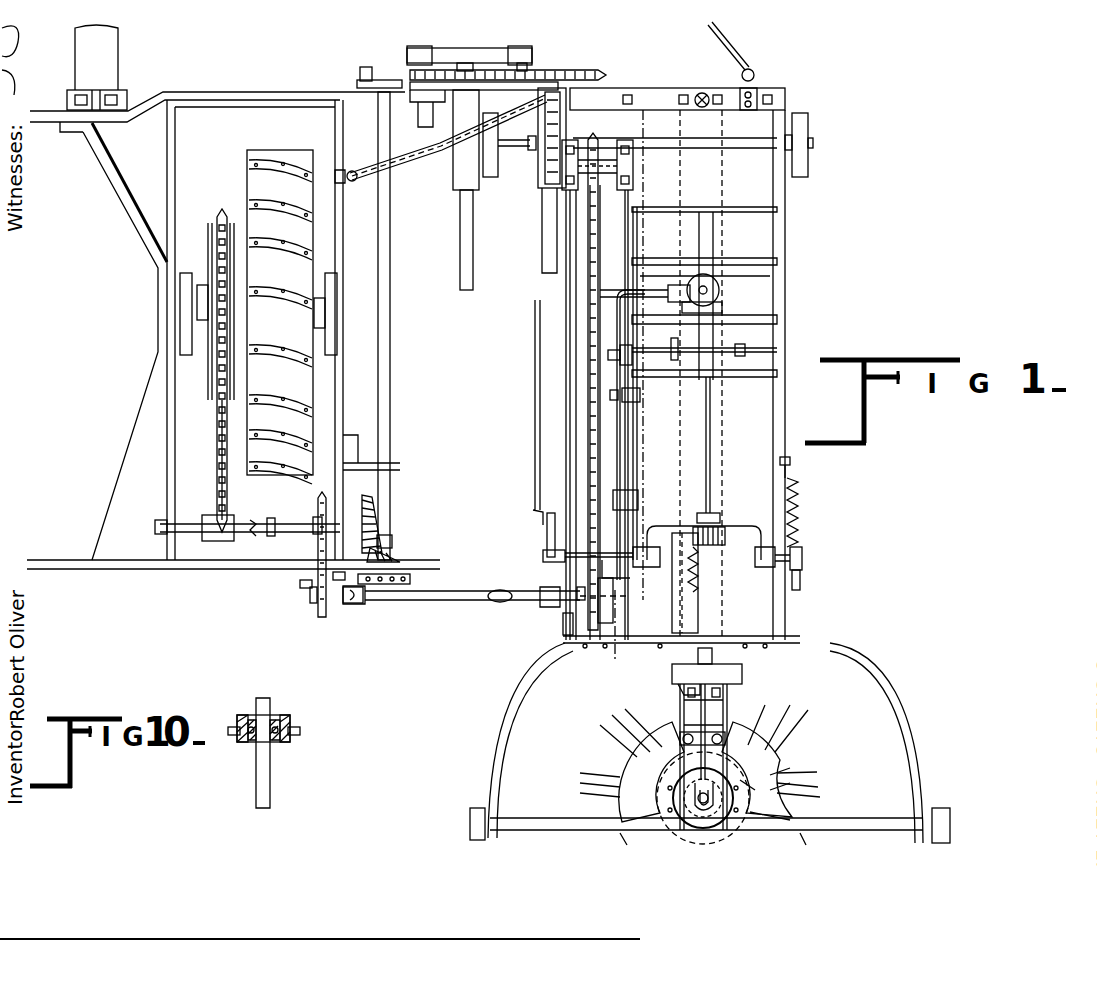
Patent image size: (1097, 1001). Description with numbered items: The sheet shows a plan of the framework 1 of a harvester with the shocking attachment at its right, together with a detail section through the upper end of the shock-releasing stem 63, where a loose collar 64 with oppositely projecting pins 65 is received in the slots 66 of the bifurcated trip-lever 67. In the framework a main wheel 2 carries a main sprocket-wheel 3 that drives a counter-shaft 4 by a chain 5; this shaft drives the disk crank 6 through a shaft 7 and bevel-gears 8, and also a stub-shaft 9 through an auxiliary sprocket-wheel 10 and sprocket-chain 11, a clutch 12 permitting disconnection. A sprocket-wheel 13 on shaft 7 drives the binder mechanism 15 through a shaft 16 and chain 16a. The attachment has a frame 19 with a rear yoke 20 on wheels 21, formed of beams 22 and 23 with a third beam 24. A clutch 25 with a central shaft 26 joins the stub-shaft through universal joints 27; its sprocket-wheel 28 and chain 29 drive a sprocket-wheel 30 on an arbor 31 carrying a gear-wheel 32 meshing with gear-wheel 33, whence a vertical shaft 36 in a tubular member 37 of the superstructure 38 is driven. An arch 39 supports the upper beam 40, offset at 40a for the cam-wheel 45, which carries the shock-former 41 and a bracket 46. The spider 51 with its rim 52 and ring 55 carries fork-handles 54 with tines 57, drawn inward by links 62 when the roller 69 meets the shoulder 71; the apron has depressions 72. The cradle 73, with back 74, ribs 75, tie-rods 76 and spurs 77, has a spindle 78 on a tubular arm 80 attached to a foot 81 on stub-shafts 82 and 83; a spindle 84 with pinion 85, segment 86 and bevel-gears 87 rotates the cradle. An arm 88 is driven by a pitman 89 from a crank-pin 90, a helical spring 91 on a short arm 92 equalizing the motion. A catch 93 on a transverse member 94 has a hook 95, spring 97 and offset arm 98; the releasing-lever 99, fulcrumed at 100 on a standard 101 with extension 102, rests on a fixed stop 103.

In FIG. 1, the framework 1 is at (248, 92).
In FIG. 1, the main wheel 2 is at (300, 238).
In FIG. 1, the main sprocket-wheel 3 is at (220, 225).
In FIG. 1, the counter-shaft 4 is at (285, 524).
In FIG. 1, the chain 5 is at (215, 438).
In FIG. 1, the disk crank 6 is at (375, 88).
In FIG. 1, the shaft 7 is at (392, 372).
In FIG. 1, the bevel-gears 8 is at (375, 522).
In FIG. 1, the stub-shaft 9 is at (340, 603).
In FIG. 1, the auxiliary sprocket-wheel 10 is at (318, 538).
In FIG. 1, the sprocket-chain 11 is at (320, 578).
In FIG. 1, the clutch 12 is at (250, 522).
In FIG. 1, the sprocket-wheel 13 is at (412, 578).
In FIG. 1, the binder mechanism 15 is at (486, 54).
In FIG. 1, the shaft 16 is at (428, 120).
In FIG. 1, the chain 16a is at (545, 75).
In FIG. 1, the frame 19 is at (681, 533).
In FIG. 1, the yoke 20 is at (512, 723).
In FIG. 1, the wheels 21 is at (488, 162).
In FIG. 1, the beam 22 is at (566, 438).
In FIG. 1, the beam 23 is at (790, 409).
In FIG. 1, the beam 24 is at (629, 455).
In FIG. 1, the clutch 25 is at (600, 625).
In FIG. 1, the central shaft 26 is at (547, 602).
In FIG. 1, the universal joints 27 is at (358, 603).
In FIG. 1, the sprocket-wheel 28 is at (578, 635).
In FIG. 1, the chain 29 is at (588, 380).
In FIG. 1, the sprocket-wheel 30 is at (578, 142).
In FIG. 1, the arbor 31 is at (636, 152).
In FIG. 1, the gear-wheel 32 is at (553, 215).
In FIG. 1, the gear-wheel 33 is at (555, 101).
In FIG. 1, the vertical shaft 36 is at (698, 92).
In FIG. 1, the tubular member 37 is at (706, 108).
In FIG. 1, the superstructure 38 is at (718, 90).
In FIG. 1, the arch 39 is at (528, 820).
In FIG. 1, the upper beam 40 is at (722, 499).
In FIG. 1, the downward offset 40a is at (735, 680).
In FIG. 1, the shock-former 41 is at (640, 760).
In FIG. 1, the cam-wheel 45 is at (742, 672).
In FIG. 1, the bracket 46 is at (727, 715).
In FIG. 1, the spider 51 is at (660, 801).
In FIG. 1, the rim 52 is at (790, 800).
In FIG. 1, the fork-handles 54 is at (745, 775).
In FIG. 1, the ring 55 is at (690, 770).
In FIG. 1, the tines 57 is at (778, 722).
In FIG. 1, the links 62 is at (703, 809).
In FIG. 1, the stem 63 is at (775, 785).
In FIG. 10, the stem 63 is at (272, 793).
In FIG. 10, the loose collar 64 is at (252, 745).
In FIG. 1, the pins 65 is at (698, 798).
In FIG. 10, the pins 65 is at (237, 731).
In FIG. 10, the slots 66 is at (240, 740).
In FIG. 1, the trip-lever 67 is at (700, 735).
In FIG. 10, the trip-lever 67 is at (278, 722).
In FIG. 1, the roller 69 is at (702, 662).
In FIG. 1, the shoulder 71 is at (695, 672).
In FIG. 1, the depressions 72 is at (737, 740).
In FIG. 1, the cradle 73 is at (760, 283).
In FIG. 1, the back 74 is at (703, 236).
In FIG. 1, the ribs 75 is at (775, 207).
In FIG. 1, the tie-rods 76 is at (778, 240).
In FIG. 1, the spurs 77 is at (705, 262).
In FIG. 1, the spindle 78 is at (722, 284).
In FIG. 1, the tubular arm 80 is at (710, 470).
In FIG. 1, the foot 81 is at (664, 525).
In FIG. 1, the stub-shaft 82 is at (805, 557).
In FIG. 1, the stub-shaft 83 is at (585, 556).
In FIG. 1, the spindle 84 is at (715, 547).
In FIG. 1, the pinion 85 is at (722, 536).
In FIG. 1, the segment 86 is at (685, 580).
In FIG. 1, the bevel-gears 87 is at (722, 305).
In FIG. 1, the arm 88 is at (545, 540).
In FIG. 1, the pitman 89 is at (535, 343).
In FIG. 1, the crank-pin 90 is at (535, 145).
In FIG. 1, the helical spring 91 is at (800, 520).
In FIG. 1, the short arm 92 is at (802, 585).
In FIG. 1, the catch 93 is at (793, 461).
In FIG. 1, the transverse member 94 is at (745, 352).
In FIG. 1, the hook 95 is at (672, 362).
In FIG. 1, the spring 97 is at (620, 345).
In FIG. 1, the offset arm 98 is at (608, 356).
In FIG. 1, the releasing-lever 99 is at (617, 470).
In FIG. 1, the fulcrum 100 is at (610, 394).
In FIG. 1, the standard 101 is at (622, 399).
In FIG. 1, the lateral extension 102 is at (670, 283).
In FIG. 1, the fixed stop 103 is at (613, 500).